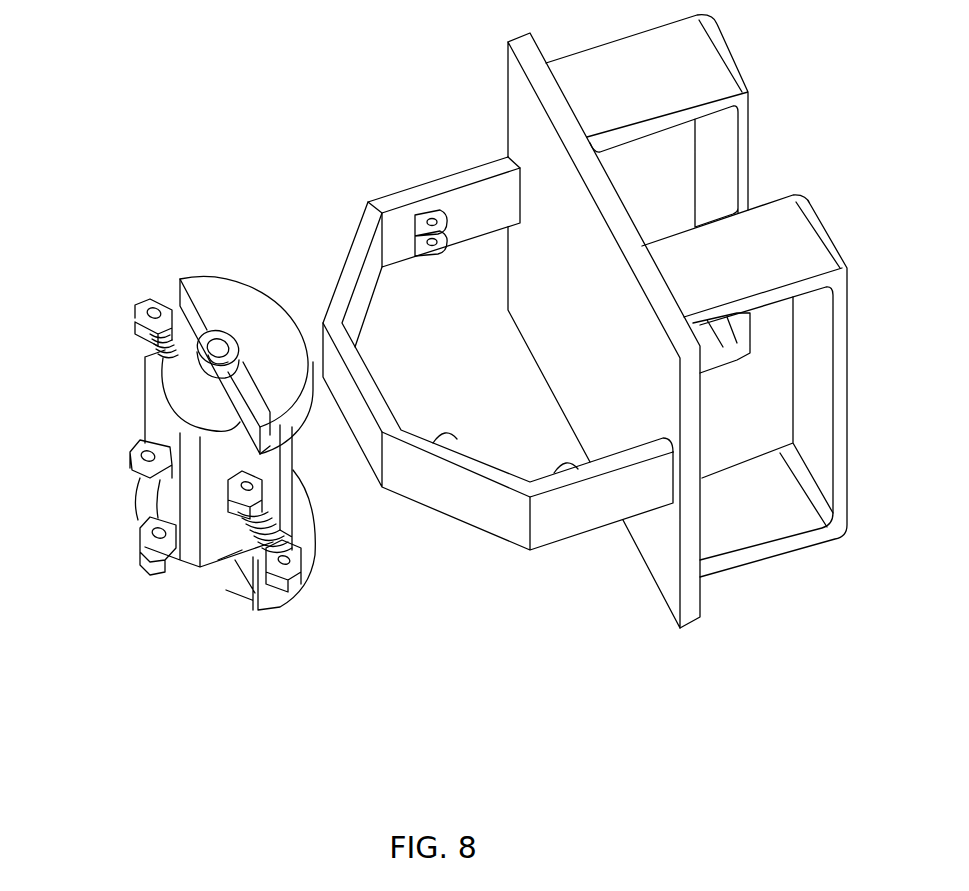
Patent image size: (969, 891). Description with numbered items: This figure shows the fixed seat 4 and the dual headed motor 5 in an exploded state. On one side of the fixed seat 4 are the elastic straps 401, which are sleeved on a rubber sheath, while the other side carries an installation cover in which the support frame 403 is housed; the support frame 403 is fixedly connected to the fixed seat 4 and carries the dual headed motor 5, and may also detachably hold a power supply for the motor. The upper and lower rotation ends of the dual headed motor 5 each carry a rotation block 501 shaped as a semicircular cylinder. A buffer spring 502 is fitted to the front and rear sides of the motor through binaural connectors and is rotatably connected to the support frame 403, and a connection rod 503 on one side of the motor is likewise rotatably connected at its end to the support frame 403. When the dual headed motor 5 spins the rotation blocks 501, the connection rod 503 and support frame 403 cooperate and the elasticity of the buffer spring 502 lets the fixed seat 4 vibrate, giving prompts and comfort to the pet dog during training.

The fixed seat 4 is at (520, 112).
The elastic strap 401 is at (796, 232).
The support frame 403 is at (493, 513).
The dual headed motor 5 is at (150, 418).
The rotation block 501 is at (216, 287).
The buffer spring 502 is at (257, 548).
The connection rod 503 is at (148, 502).